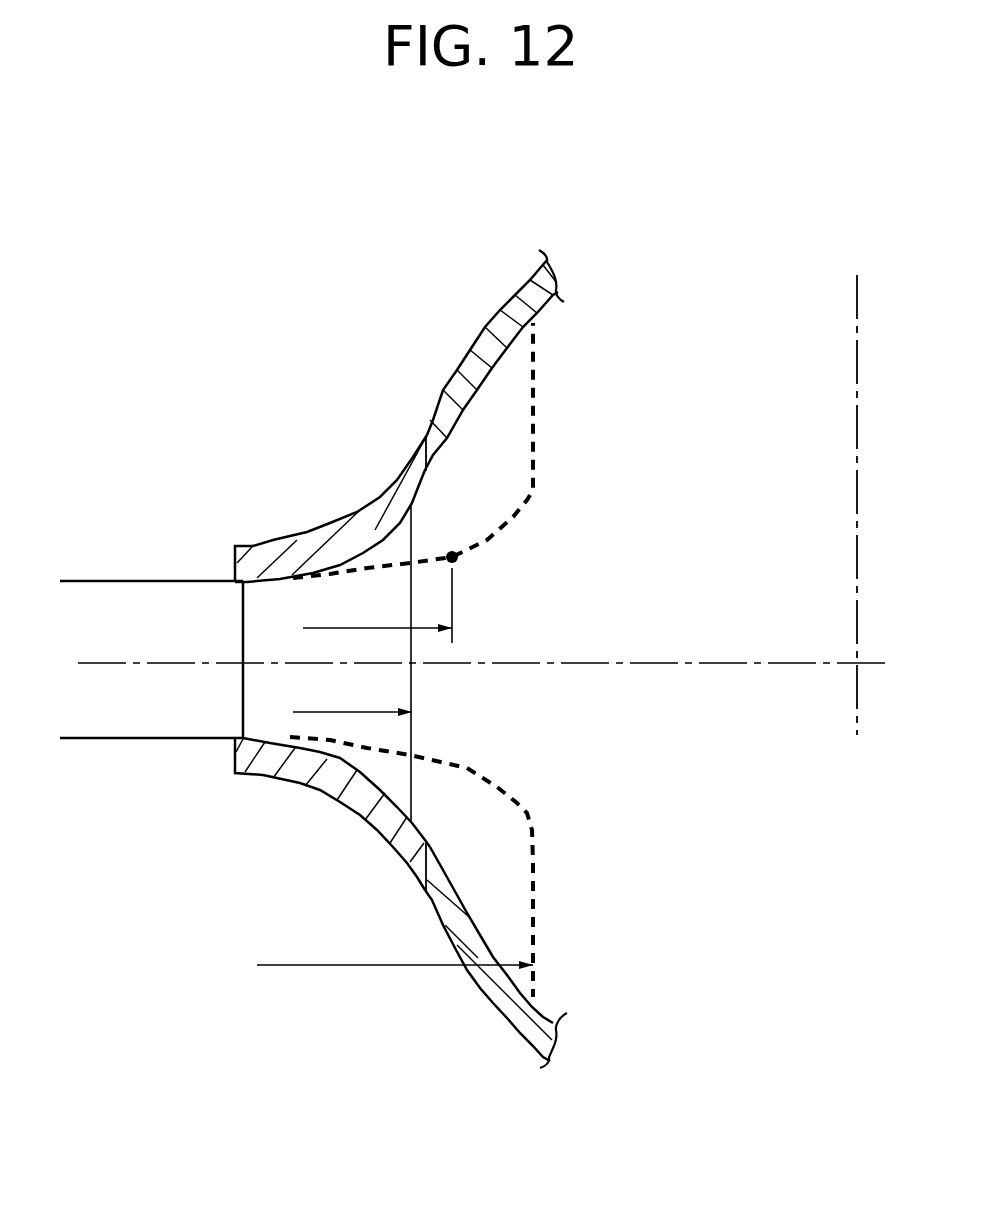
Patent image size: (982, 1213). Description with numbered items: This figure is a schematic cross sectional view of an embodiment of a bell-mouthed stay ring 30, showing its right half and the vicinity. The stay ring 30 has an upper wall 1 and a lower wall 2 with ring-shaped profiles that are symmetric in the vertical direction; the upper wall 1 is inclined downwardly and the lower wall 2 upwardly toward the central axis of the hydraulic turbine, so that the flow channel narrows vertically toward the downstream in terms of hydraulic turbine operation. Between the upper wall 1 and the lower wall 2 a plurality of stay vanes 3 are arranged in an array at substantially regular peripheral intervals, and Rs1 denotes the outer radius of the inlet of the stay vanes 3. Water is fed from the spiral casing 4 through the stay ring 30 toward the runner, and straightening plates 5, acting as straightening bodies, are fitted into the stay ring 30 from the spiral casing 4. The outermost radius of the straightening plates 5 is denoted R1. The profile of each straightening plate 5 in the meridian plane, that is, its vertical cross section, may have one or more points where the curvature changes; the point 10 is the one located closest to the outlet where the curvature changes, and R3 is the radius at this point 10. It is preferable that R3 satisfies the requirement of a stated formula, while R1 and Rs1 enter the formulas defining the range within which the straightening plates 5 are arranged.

The stay ring 30 is at (310, 427).
The upper wall 1 is at (312, 535).
The lower wall 2 is at (318, 795).
The stay vanes 3 is at (248, 602).
The spiral casing 4 is at (483, 350).
The straightening plates 5 is at (534, 498).
The point 10 is at (455, 560).
The outermost radius of the straightening plates R1 is at (363, 963).
The radius at the point closest to the outlet where the curvature changes R3 is at (370, 628).
The outer radius of the inlet of the stay vanes Rs1 is at (370, 712).